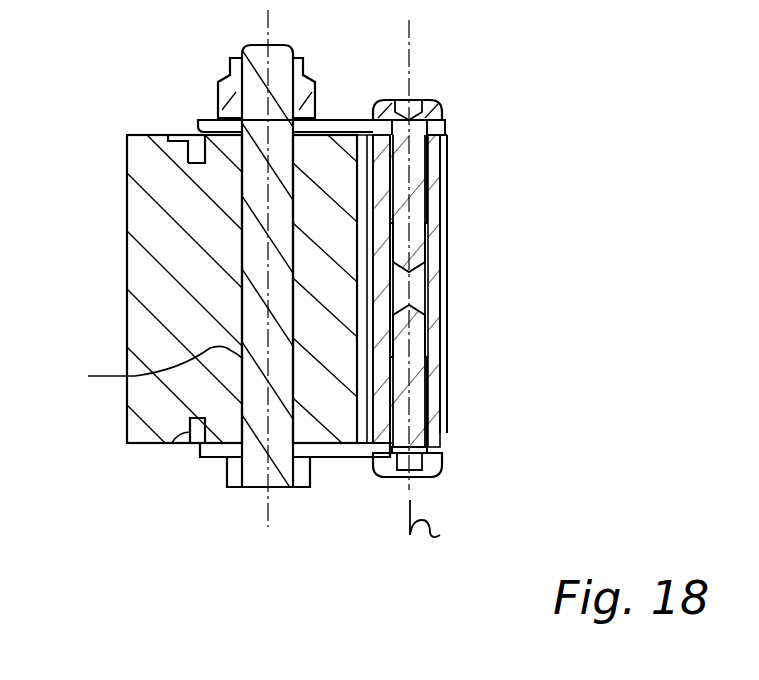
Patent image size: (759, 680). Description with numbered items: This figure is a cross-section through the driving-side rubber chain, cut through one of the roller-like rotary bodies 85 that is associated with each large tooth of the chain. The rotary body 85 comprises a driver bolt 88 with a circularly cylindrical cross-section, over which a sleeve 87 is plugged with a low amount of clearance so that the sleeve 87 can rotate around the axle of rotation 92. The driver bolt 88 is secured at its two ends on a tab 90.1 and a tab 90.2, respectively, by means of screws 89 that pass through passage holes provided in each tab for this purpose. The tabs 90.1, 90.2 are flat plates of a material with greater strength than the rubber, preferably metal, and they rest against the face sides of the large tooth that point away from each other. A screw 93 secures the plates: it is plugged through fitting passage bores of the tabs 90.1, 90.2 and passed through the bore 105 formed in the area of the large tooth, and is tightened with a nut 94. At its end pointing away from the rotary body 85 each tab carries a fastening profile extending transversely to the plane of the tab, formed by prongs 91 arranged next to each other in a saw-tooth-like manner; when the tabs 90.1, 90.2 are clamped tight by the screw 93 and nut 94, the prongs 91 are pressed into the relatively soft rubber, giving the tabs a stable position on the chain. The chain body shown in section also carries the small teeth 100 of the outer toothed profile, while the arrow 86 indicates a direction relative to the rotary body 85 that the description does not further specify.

The rotary body 85 is at (455, 195).
The sleeve unit 86 is at (473, 398).
The sleeve 87 is at (445, 235).
The driver bolt 88 is at (432, 293).
The screw 89 is at (430, 102).
The tab 90.1 is at (350, 120).
The tab 90.2 is at (332, 458).
The prong 91 is at (188, 152).
The axle of rotation 92 is at (449, 524).
The screw 93 is at (237, 480).
The nut 94 is at (232, 95).
The small tooth 100 is at (135, 256).
The bore 105 is at (124, 368).